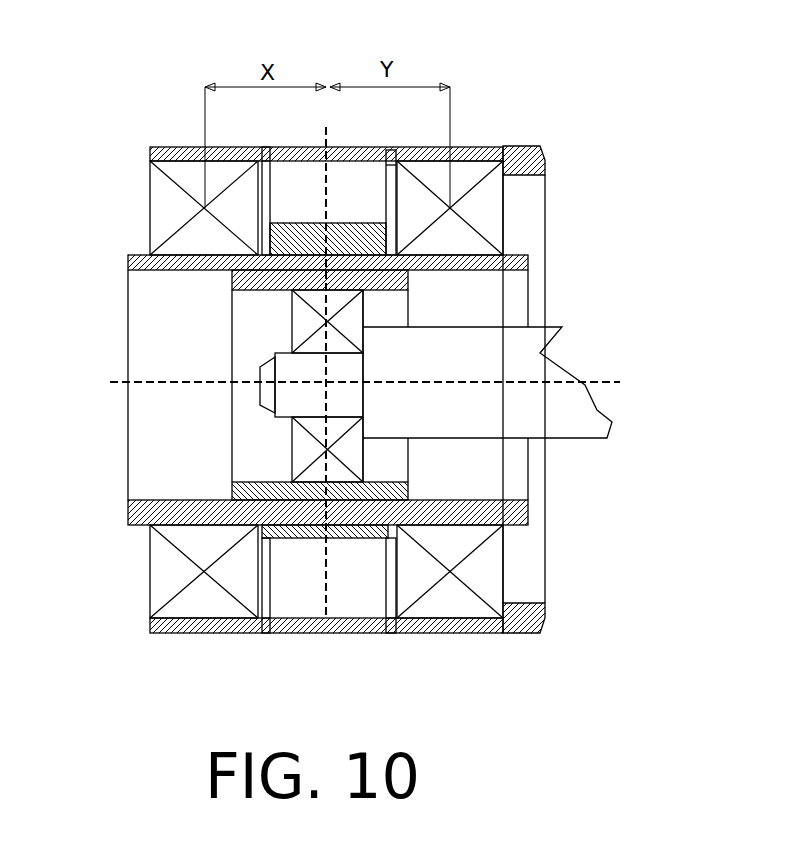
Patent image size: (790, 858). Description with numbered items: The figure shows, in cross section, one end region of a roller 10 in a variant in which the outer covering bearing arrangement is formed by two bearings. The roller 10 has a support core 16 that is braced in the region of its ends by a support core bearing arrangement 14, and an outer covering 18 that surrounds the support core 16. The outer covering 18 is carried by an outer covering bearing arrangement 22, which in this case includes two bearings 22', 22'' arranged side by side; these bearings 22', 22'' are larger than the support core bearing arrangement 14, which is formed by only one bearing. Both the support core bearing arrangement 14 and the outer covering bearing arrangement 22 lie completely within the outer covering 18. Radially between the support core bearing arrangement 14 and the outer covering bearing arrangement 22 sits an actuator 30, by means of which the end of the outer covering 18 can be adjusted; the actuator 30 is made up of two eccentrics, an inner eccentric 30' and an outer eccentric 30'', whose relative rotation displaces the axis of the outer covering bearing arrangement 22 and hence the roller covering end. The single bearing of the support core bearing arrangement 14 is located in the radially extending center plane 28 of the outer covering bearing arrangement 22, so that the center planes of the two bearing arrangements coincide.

The roller 10 is at (110, 80).
The support core bearing arrangement 14 is at (292, 320).
The support core 16 is at (535, 363).
The outer covering 18 is at (473, 146).
The outer covering bearing arrangement 22 is at (534, 389).
The bearing 22' is at (154, 389).
The bearing 22'' is at (492, 176).
The radially extending center plane 28 is at (330, 542).
The actuator 30 is at (386, 425).
The inner eccentric 30' is at (229, 385).
The outer eccentric 30'' is at (278, 423).